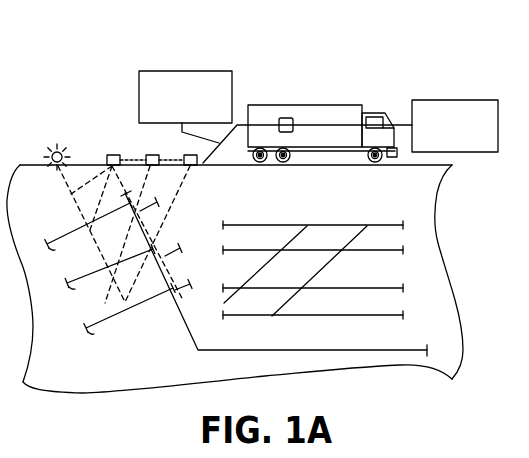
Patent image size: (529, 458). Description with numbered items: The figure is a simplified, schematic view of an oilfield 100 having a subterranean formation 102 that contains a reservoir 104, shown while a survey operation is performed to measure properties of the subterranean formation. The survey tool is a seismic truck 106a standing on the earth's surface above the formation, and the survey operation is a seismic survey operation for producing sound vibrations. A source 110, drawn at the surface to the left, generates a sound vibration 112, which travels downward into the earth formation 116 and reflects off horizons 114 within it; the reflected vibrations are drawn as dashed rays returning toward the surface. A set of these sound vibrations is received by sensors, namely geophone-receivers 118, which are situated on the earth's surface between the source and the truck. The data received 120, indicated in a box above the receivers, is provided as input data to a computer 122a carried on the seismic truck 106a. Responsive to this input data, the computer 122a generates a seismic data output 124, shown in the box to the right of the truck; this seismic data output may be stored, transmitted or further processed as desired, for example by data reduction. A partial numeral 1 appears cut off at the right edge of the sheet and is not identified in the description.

The oilfield 100 is at (407, 77).
The subterranean formation 102 is at (324, 247).
The reservoir 104 is at (382, 284).
The seismic truck 106a is at (340, 105).
The source 110 is at (51, 151).
The sound vibration 112 is at (80, 212).
The horizons 114 is at (158, 213).
The earth formation 116 is at (186, 327).
The geophone-receivers 118 is at (188, 154).
The data received 120 is at (176, 70).
The computer 122a is at (288, 117).
The seismic data output 124 is at (452, 100).
The partial numeral 1 is at (523, 147).